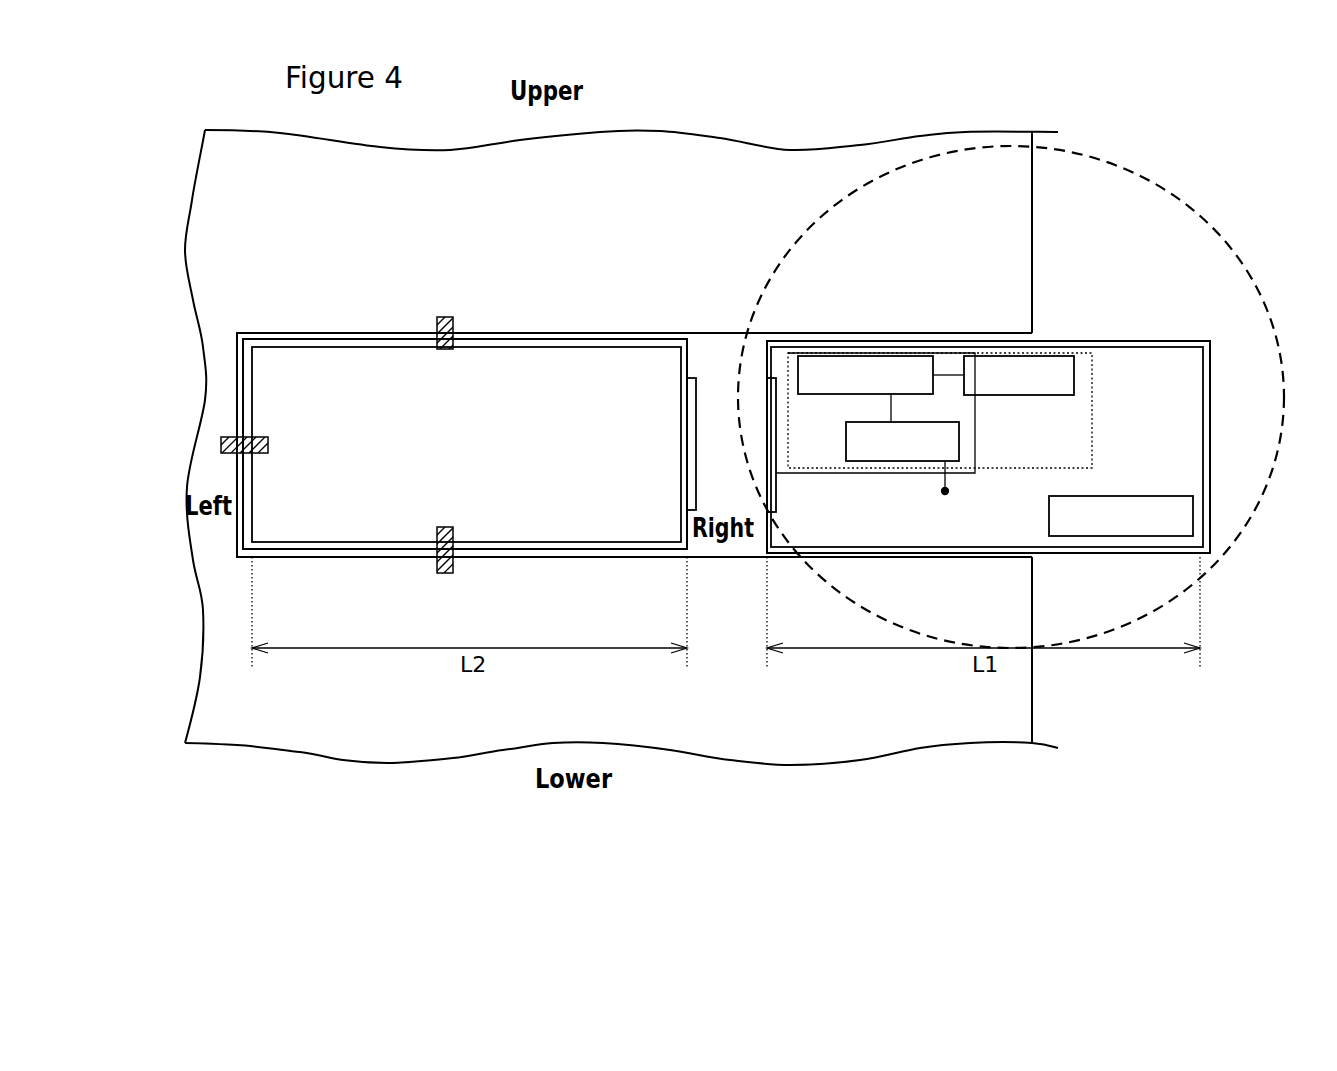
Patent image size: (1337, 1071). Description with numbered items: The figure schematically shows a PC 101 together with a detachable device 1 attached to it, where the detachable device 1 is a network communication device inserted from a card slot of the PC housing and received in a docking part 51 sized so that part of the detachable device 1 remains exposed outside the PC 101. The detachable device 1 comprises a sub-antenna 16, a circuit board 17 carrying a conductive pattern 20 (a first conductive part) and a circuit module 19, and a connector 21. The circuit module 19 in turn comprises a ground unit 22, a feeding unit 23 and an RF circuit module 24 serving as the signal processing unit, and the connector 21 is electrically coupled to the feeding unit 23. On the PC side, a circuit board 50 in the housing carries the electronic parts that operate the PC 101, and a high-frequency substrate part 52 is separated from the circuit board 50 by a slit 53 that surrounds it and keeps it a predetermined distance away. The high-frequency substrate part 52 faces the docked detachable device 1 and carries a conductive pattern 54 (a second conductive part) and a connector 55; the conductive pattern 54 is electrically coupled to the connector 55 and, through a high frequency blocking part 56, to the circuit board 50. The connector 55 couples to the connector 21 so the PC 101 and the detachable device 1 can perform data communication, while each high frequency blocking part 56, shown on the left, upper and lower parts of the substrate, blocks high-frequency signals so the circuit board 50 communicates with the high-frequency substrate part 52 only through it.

The detachable device 1 is at (1165, 177).
The PC 101 is at (882, 135).
The circuit board 50 is at (1030, 187).
The slit 53 is at (558, 337).
The high-frequency substrate part 52 is at (643, 340).
The conductive pattern 54 is at (521, 357).
The high frequency blocking part 56 is at (445, 317).
The connector 55 is at (692, 437).
The docking part 51 is at (712, 358).
The circuit board 17 is at (1160, 338).
The conductive pattern 20 is at (1203, 440).
The connector 21 is at (770, 382).
The circuit module 19 is at (1093, 432).
The RF circuit module 24 is at (830, 394).
The ground unit 22 is at (920, 422).
The feeding unit 23 is at (1075, 383).
The sub-antenna 16 is at (1145, 496).